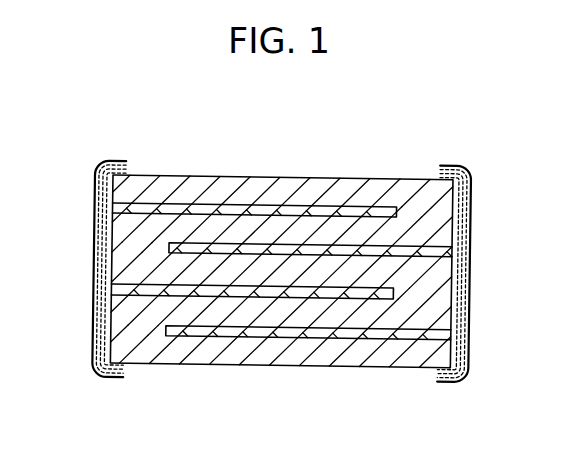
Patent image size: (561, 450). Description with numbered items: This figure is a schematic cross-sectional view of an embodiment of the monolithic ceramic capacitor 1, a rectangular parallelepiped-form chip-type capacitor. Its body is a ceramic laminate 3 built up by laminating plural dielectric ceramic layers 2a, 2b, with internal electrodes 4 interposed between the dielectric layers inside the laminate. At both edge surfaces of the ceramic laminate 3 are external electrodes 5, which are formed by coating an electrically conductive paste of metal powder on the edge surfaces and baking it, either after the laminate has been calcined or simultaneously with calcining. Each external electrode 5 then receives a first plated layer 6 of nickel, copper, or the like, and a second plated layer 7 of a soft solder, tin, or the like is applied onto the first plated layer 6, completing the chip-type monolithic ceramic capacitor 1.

The monolithic ceramic capacitor 1 is at (283, 277).
The dielectric ceramic layers 2a is at (176, 189).
The dielectric ceramic layers 2b is at (351, 237).
The ceramic laminate 3 is at (208, 176).
The internal electrodes 4 is at (279, 210).
The external electrodes 5 is at (97, 207).
The first plated layer 6 is at (101, 254).
The second plated layer 7 is at (98, 307).